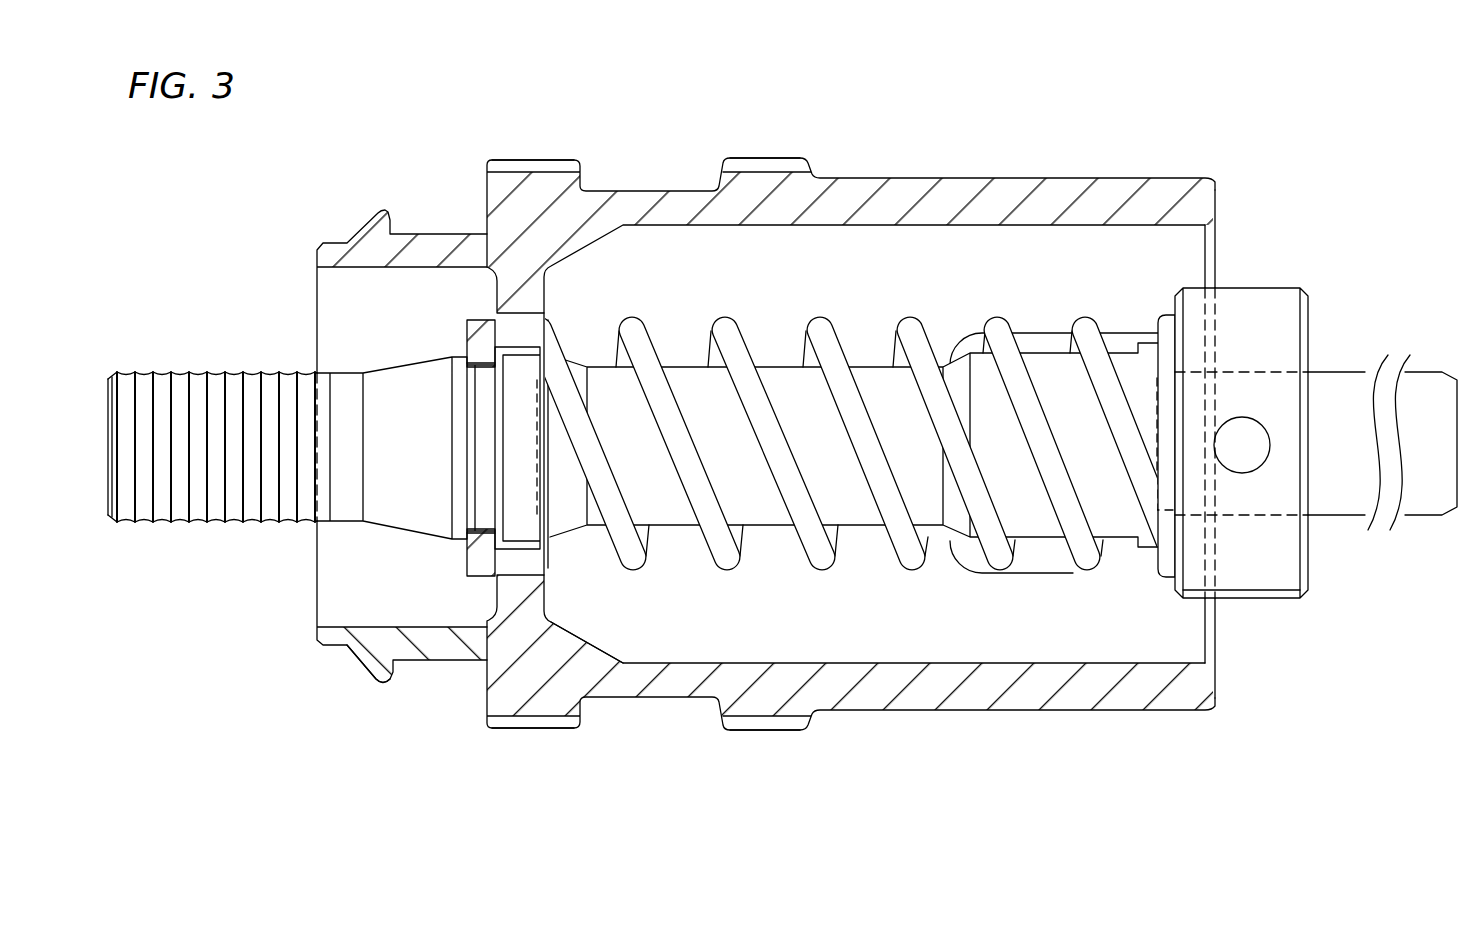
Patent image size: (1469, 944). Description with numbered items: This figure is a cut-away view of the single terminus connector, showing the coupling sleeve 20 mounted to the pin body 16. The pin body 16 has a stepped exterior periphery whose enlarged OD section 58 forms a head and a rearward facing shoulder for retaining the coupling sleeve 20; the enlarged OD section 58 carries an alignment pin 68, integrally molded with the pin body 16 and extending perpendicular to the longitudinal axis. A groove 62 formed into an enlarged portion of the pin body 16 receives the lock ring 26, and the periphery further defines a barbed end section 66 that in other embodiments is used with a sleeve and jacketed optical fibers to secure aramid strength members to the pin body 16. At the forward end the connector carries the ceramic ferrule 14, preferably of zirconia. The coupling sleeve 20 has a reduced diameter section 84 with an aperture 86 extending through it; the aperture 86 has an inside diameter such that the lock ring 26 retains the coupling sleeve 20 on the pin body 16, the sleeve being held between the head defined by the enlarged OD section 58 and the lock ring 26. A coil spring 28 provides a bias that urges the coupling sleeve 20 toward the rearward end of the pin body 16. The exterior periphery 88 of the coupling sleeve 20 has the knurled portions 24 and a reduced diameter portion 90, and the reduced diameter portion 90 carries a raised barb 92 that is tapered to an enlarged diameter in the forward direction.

The ferrule 14 is at (1353, 372).
The pin body 16 is at (1272, 617).
The coupling sleeve 20 is at (937, 716).
The knurled exterior 24 is at (758, 160).
The lock ring 26 is at (484, 562).
The coil spring 28 is at (1000, 325).
The enlarged OD section 58 is at (1258, 292).
The groove 62 is at (470, 465).
The barbed end section 66 is at (184, 518).
The alignment pin 68 is at (1253, 446).
The reduced diameter section 84 is at (544, 584).
The aperture 86 is at (516, 352).
The exterior periphery 88 is at (613, 178).
The reduced diameter portion 90 is at (442, 237).
The raised barb 92 is at (378, 672).